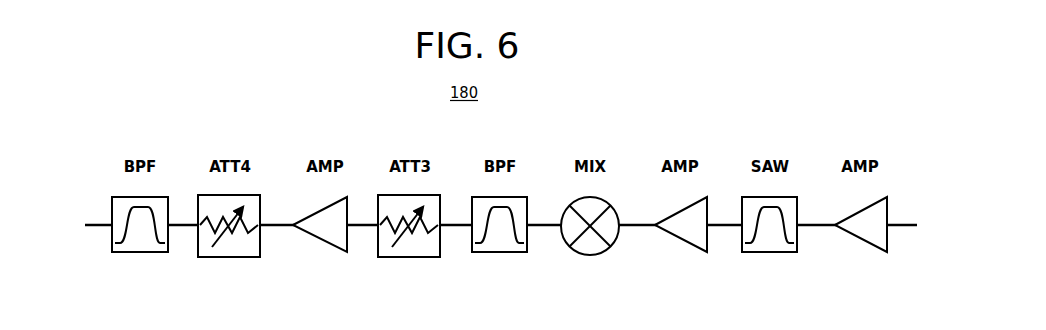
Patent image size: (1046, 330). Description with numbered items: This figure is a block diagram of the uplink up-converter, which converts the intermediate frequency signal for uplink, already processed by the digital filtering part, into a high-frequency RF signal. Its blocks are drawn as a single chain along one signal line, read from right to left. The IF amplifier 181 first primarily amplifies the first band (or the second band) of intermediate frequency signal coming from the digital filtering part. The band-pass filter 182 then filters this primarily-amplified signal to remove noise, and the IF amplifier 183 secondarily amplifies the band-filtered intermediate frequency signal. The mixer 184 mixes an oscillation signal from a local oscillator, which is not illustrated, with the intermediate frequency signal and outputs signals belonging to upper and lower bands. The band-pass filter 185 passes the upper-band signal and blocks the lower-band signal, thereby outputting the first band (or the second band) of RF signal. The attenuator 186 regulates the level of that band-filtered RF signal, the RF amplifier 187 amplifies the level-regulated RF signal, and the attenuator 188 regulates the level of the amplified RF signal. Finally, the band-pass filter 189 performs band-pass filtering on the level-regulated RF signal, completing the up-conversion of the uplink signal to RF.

The IF amplifier 181 is at (862, 247).
The band-pass filter 182 is at (772, 254).
The IF amplifier 183 is at (683, 247).
The mixer 184 is at (587, 257).
The band-pass filter 185 is at (495, 254).
The attenuator 186 is at (400, 259).
The RF amplifier 187 is at (323, 247).
The attenuator 188 is at (235, 259).
The band-pass filter 189 is at (140, 254).